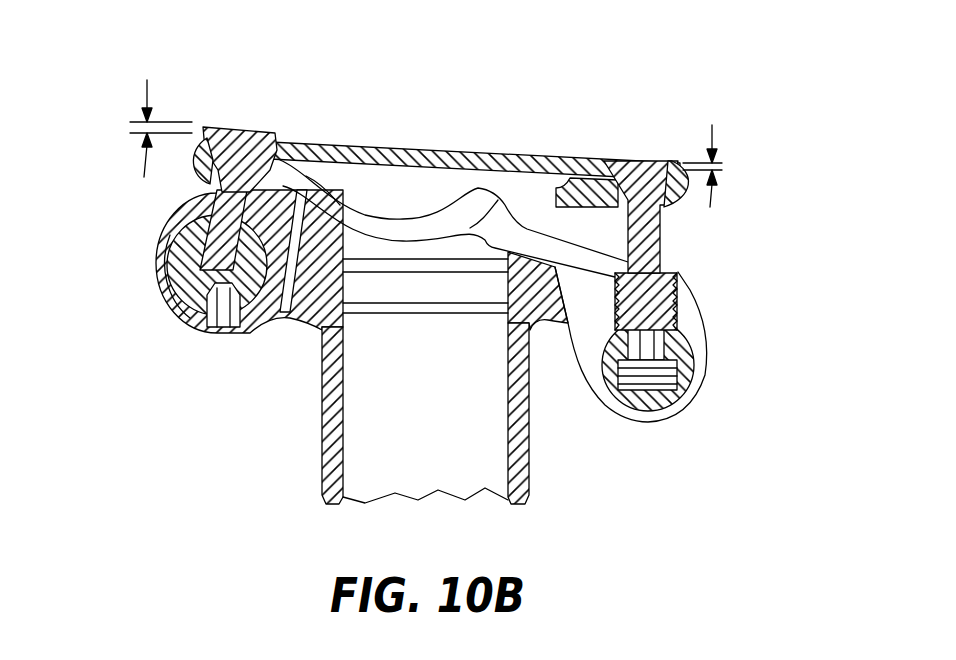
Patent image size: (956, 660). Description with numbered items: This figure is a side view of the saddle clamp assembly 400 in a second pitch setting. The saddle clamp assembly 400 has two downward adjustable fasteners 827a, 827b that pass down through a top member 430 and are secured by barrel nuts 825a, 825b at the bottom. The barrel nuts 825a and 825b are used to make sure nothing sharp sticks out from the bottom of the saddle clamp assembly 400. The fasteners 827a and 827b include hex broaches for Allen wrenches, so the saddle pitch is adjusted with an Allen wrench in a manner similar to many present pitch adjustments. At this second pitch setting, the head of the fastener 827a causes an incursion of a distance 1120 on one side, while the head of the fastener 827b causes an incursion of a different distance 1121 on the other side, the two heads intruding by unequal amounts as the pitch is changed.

The saddle clamp assembly 400 is at (465, 83).
The plate 430 is at (480, 150).
The downward adjustable fastener 827a is at (238, 128).
The downward adjustable fastener 827b is at (636, 178).
The barrel nut 825a is at (165, 268).
The barrel nut 825b is at (700, 355).
The incursion distance 1120 is at (144, 177).
The incursion distance 1121 is at (710, 207).